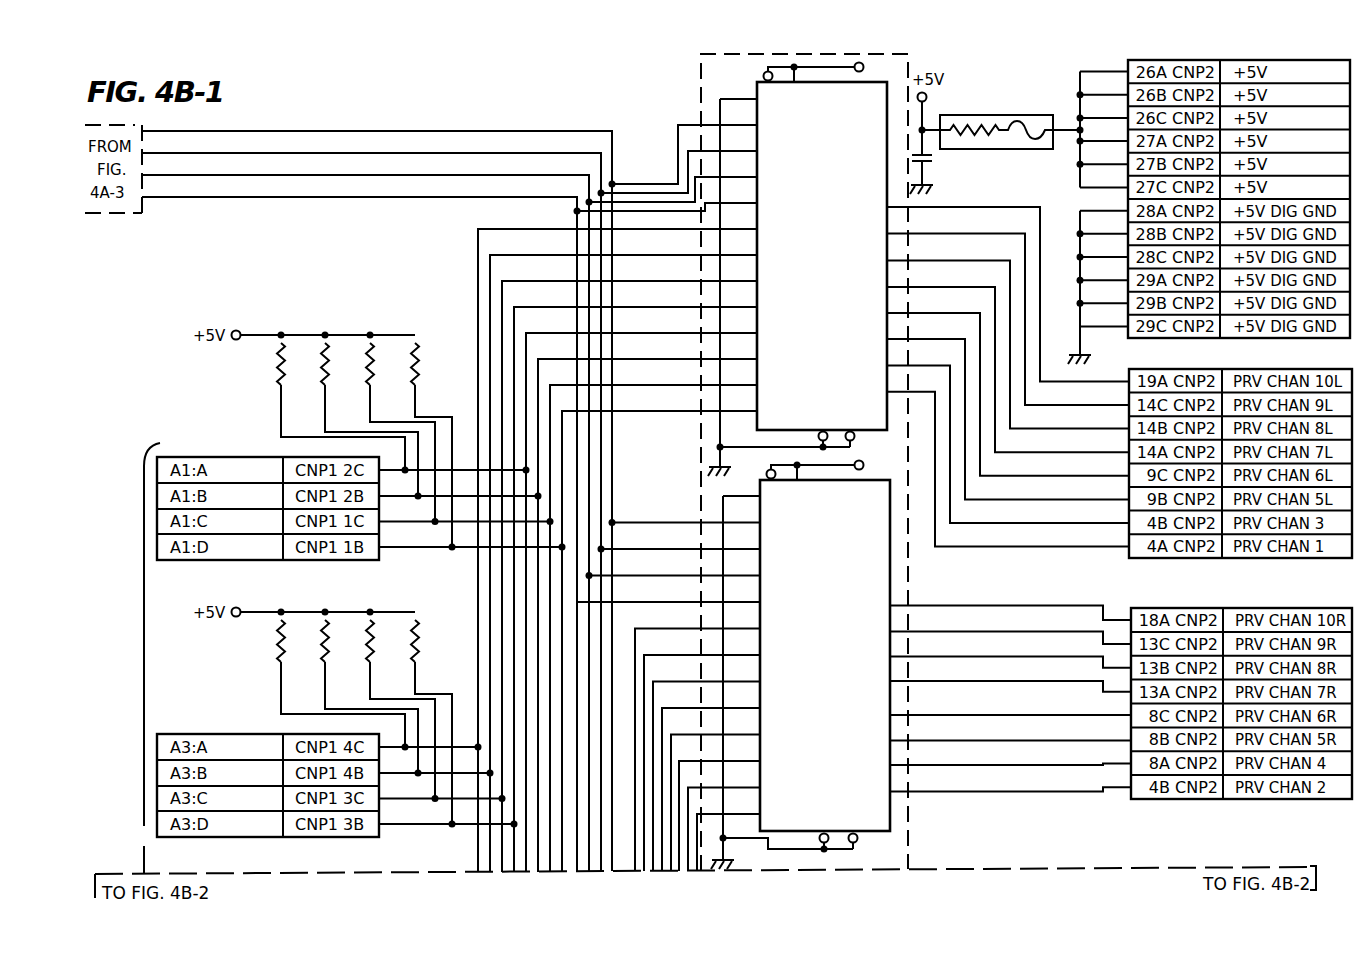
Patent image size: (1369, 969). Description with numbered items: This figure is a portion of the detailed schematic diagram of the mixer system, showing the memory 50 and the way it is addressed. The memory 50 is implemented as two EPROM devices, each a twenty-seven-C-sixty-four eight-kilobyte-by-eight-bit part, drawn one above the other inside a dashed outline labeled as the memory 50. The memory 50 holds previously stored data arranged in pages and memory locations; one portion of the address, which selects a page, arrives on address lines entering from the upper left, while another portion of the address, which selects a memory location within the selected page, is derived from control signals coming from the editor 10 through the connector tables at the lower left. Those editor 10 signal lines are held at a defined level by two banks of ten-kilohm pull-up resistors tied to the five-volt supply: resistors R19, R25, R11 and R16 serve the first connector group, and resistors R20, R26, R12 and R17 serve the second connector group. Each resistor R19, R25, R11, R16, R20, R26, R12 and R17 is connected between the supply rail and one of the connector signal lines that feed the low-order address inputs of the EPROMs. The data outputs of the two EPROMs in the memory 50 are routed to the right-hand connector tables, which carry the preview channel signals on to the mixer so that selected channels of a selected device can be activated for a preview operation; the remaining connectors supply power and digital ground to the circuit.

The memory 50 is at (700, 85).
The editor 10 is at (144, 826).
The 10K pull-up resistor R19 is at (337, 392).
The 10K pull-up resistor R25 is at (365, 405).
The 10K pull-up resistor R11 is at (396, 417).
The 10K pull-up resistor R16 is at (427, 430).
The 10K pull-up resistor R20 is at (337, 669).
The 10K pull-up resistor R26 is at (365, 682).
The 10K pull-up resistor R12 is at (396, 694).
The 10K pull-up resistor R17 is at (427, 707).